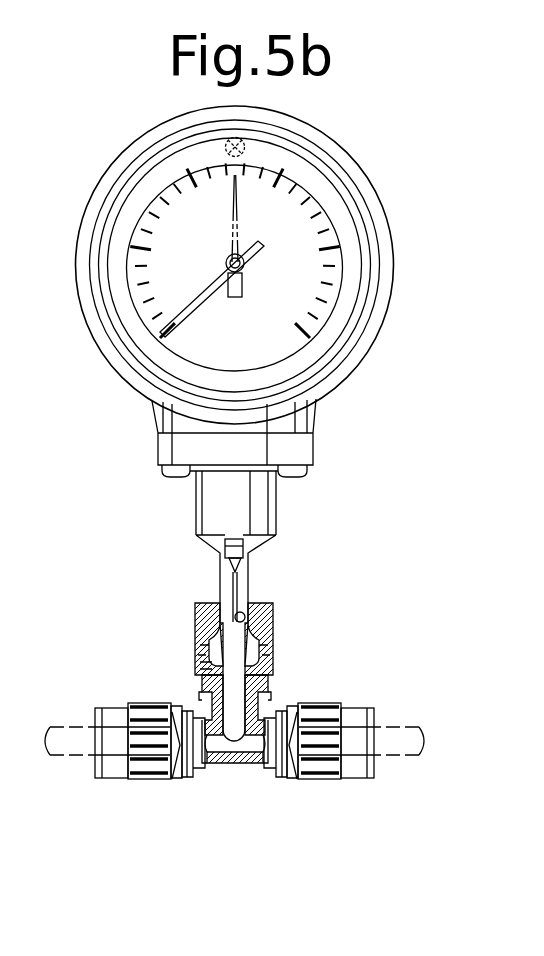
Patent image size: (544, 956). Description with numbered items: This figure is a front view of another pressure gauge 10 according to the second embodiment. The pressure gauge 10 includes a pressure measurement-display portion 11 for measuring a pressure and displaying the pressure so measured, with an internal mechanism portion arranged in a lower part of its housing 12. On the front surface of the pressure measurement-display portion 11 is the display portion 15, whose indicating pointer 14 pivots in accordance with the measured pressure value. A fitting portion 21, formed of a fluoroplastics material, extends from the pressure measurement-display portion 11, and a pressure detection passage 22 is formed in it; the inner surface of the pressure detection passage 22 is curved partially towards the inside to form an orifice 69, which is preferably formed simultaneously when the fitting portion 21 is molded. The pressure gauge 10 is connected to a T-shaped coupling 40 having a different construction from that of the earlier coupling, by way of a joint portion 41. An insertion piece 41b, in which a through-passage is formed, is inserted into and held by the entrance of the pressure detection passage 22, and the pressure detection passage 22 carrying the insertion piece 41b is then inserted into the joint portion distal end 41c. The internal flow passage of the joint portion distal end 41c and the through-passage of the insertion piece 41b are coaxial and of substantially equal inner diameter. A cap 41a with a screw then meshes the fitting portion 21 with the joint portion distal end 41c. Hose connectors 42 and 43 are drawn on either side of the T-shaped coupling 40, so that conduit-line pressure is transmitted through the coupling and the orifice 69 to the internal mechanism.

The pressure gauge 10 is at (363, 148).
The pressure measurement-display portion 11 is at (300, 481).
The housing 12 is at (385, 207).
The indicating pointer 14 is at (200, 285).
The display portion 15 is at (283, 277).
The fitting portion 21 is at (258, 570).
The pressure detection passage 22 is at (243, 614).
The T-shaped coupling 40 is at (240, 784).
The joint portion 41 is at (285, 663).
The cap 41a is at (273, 632).
The insertion piece 41b is at (202, 637).
The joint portion distal end 41c is at (208, 663).
The left hose connector 42 is at (117, 787).
The right hose connector 43 is at (338, 787).
The orifice 69 is at (227, 587).